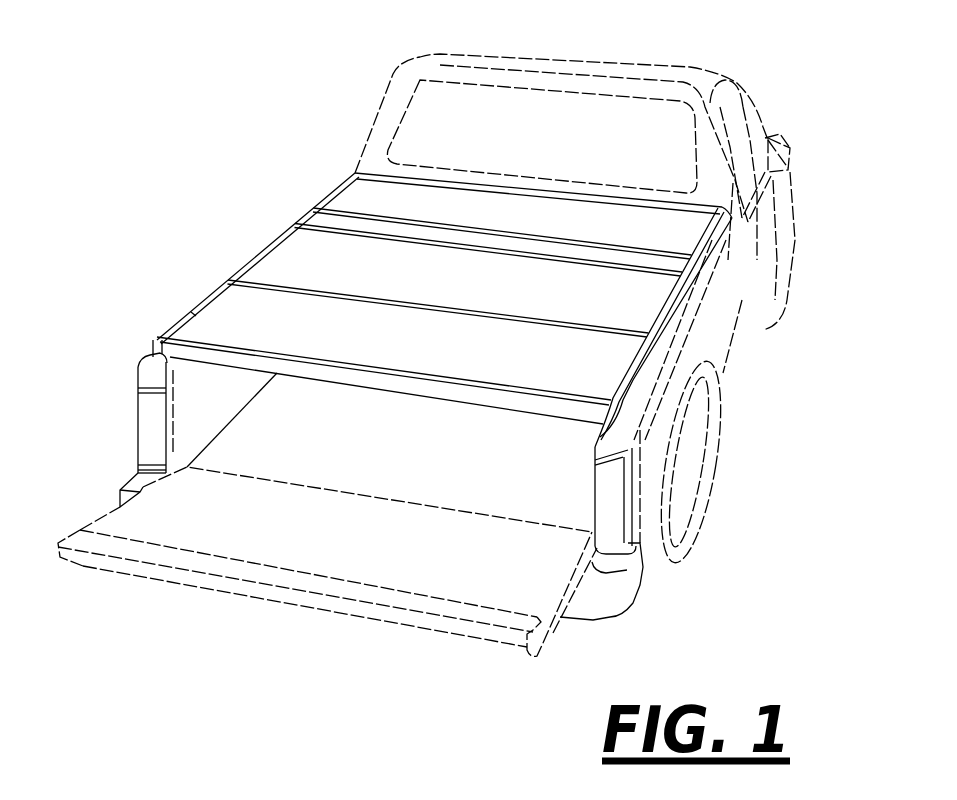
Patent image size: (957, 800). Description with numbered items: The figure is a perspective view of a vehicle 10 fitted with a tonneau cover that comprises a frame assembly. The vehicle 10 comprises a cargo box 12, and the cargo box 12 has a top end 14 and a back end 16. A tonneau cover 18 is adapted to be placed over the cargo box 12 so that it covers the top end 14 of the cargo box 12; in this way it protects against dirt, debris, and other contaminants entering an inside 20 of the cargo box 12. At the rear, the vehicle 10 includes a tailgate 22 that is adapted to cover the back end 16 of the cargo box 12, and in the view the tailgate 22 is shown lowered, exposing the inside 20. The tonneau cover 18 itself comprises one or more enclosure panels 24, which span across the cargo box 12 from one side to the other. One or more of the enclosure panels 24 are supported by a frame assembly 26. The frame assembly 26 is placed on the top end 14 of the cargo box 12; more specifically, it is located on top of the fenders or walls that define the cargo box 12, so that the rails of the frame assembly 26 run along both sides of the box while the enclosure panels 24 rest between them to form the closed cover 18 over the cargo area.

The vehicle 10 is at (367, 42).
The cargo box 12 is at (722, 340).
The top end 14 is at (176, 370).
The back end 16 is at (182, 457).
The tonneau cover 18 is at (690, 236).
The inside 20 is at (550, 475).
The tailgate 22 is at (193, 578).
The enclosure panels 24 is at (337, 177).
The frame assembly 26 is at (280, 230).